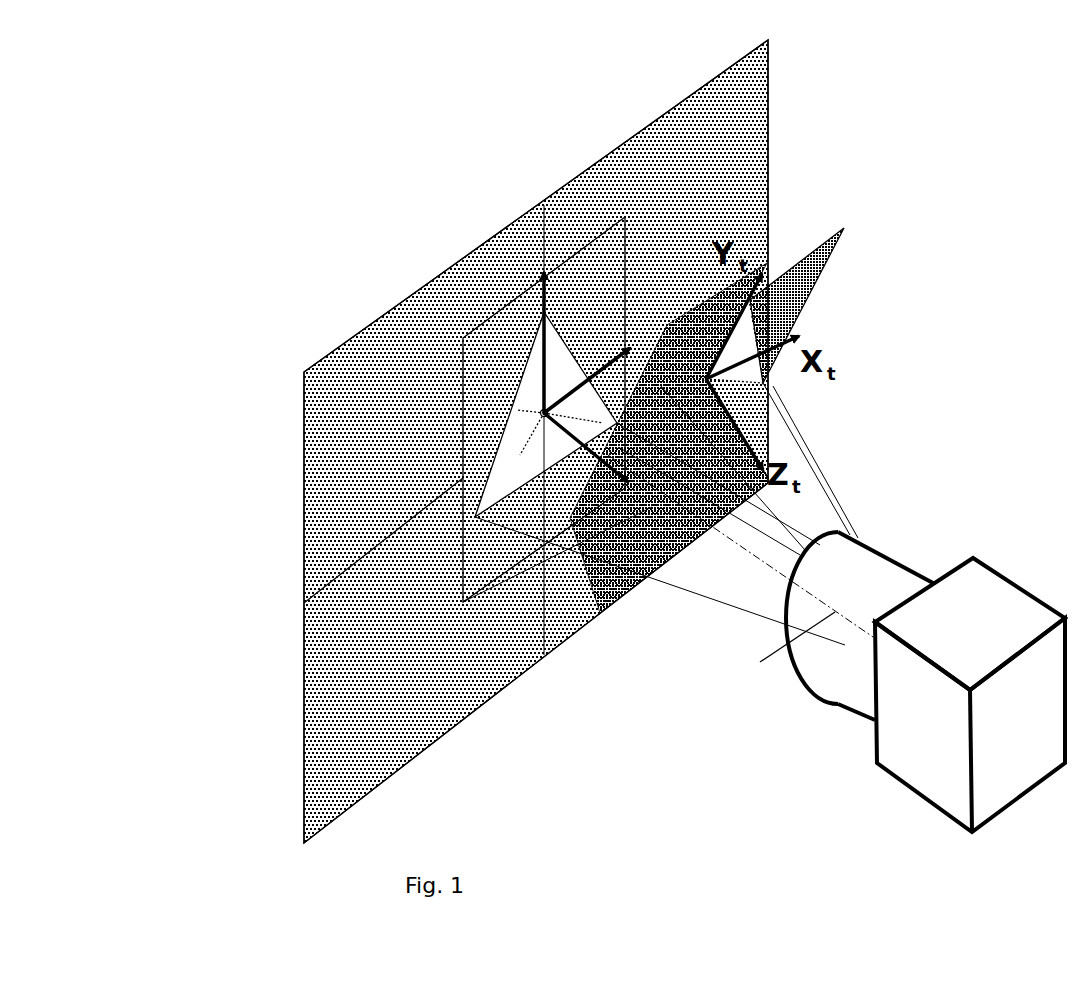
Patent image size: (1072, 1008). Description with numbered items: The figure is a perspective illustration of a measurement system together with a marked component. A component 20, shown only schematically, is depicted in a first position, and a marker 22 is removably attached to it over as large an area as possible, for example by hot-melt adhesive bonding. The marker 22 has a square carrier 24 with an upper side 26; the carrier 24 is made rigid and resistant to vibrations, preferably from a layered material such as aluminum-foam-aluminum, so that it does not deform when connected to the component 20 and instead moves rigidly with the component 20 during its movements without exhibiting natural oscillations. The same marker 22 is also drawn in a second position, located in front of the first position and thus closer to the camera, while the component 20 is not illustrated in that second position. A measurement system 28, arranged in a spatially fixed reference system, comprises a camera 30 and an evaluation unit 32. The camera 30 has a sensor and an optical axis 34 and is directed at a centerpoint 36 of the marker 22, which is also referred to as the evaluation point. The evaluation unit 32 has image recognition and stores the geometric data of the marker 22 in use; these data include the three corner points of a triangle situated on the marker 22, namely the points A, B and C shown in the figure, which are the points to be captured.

The component 20 is at (392, 310).
The marker 22 is at (610, 262).
The carrier 24 is at (473, 430).
The upper side 26 is at (480, 573).
The measurement system 28 is at (858, 658).
The camera 30 is at (842, 650).
The evaluation unit 32 is at (918, 757).
The optical axis 34 is at (835, 612).
The centerpoint 36 is at (540, 410).
The corner point A is at (846, 232).
The corner point B is at (650, 465).
The corner point C is at (763, 383).